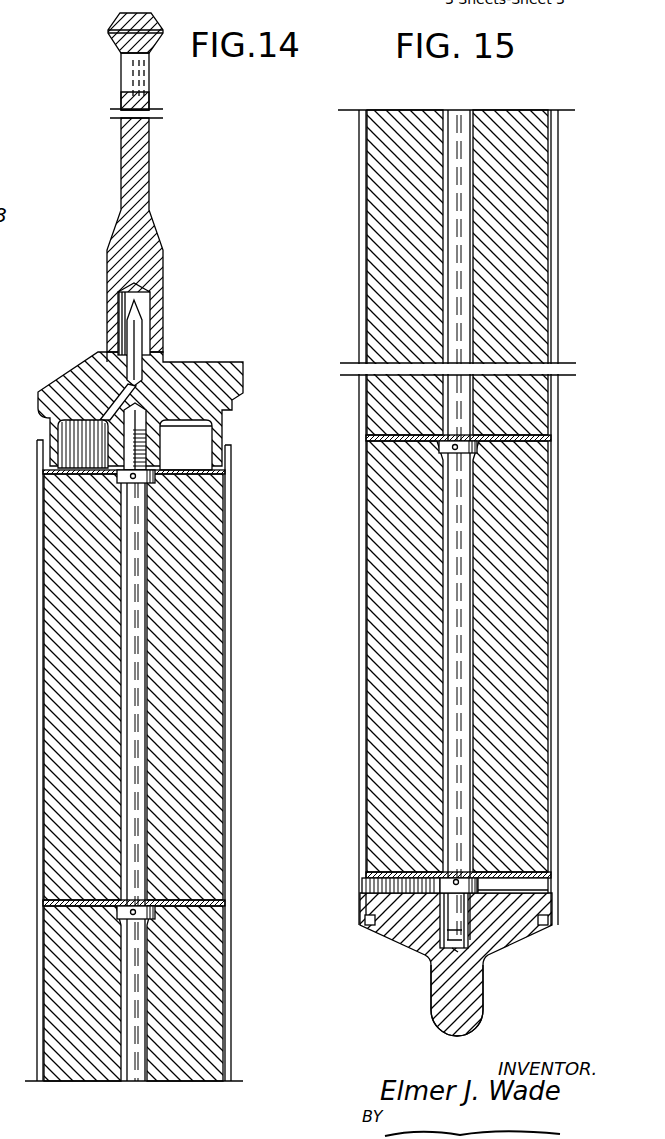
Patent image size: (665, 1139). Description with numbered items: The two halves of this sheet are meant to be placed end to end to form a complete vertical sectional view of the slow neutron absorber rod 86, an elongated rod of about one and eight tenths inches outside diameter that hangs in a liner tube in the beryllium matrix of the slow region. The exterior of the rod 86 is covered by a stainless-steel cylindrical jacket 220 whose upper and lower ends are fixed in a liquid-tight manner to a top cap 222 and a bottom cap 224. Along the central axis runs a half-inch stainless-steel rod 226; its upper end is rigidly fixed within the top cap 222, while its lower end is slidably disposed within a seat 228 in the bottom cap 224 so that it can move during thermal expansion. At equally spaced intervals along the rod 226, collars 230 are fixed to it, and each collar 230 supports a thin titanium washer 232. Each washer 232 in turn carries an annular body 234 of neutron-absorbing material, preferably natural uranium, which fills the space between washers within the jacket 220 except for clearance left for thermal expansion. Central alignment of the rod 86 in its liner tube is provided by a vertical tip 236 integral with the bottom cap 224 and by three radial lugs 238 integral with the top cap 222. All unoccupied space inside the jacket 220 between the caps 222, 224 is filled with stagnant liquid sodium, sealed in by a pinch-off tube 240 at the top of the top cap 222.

In FIG. 14, the slow rod 86 is at (74, 365).
In FIG. 15, the slow rod 86 is at (430, 985).
In FIG. 14, the cylindrical jacket 220 is at (38, 563).
In FIG. 15, the cylindrical jacket 220 is at (556, 732).
In FIG. 14, the top cap 222 is at (55, 418).
In FIG. 15, the bottom cap 224 is at (420, 942).
In FIG. 14, the stainless-steel rod 226 is at (138, 710).
In FIG. 15, the stainless-steel rod 226 is at (455, 152).
In FIG. 15, the seat 228 is at (465, 950).
In FIG. 14, the collar 230 is at (158, 912).
In FIG. 15, the collar 230 is at (478, 882).
In FIG. 14, the titanium washer 232 is at (210, 900).
In FIG. 15, the titanium washer 232 is at (385, 433).
In FIG. 14, the annular body 234 is at (207, 622).
In FIG. 15, the annular body 234 is at (385, 224).
In FIG. 15, the vertical tip 236 is at (470, 1003).
In FIG. 14, the radial lug 238 is at (197, 368).
In FIG. 14, the pinch-off tube 240 is at (143, 313).